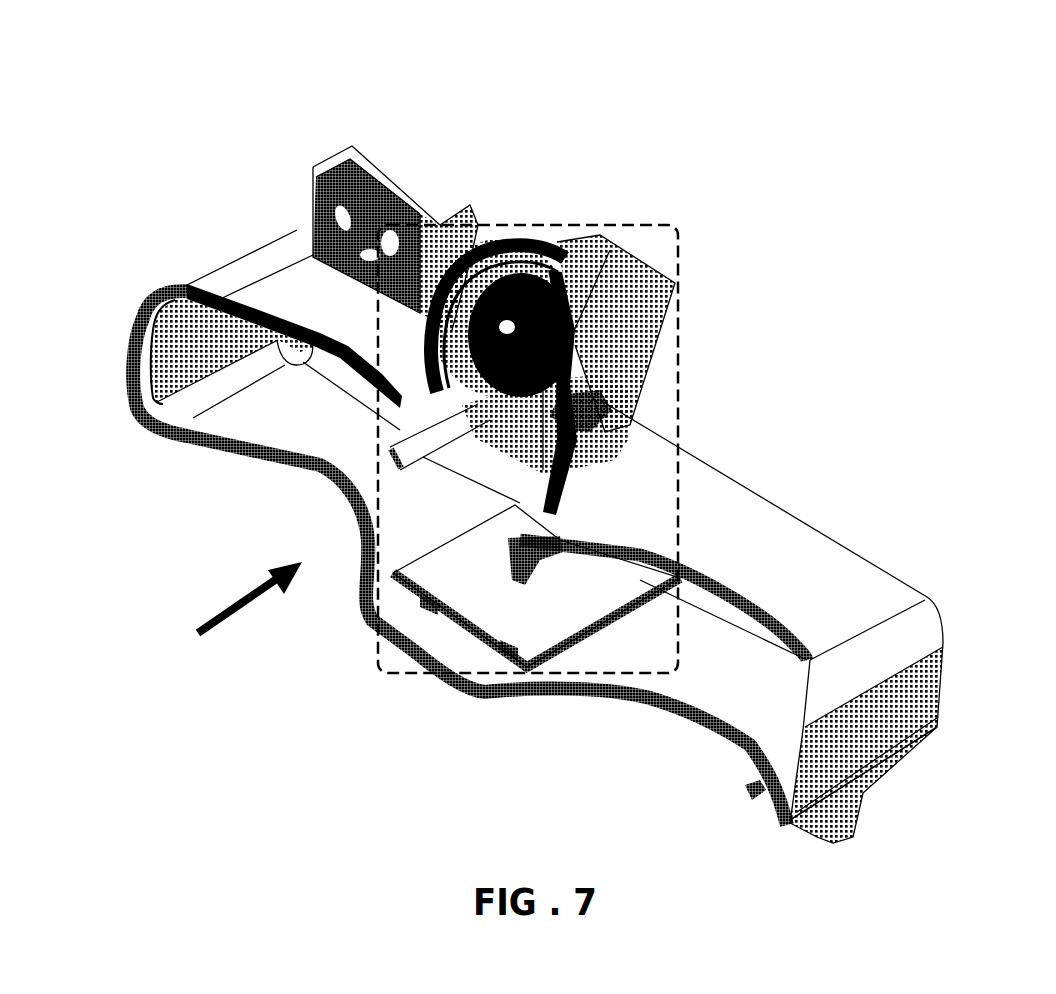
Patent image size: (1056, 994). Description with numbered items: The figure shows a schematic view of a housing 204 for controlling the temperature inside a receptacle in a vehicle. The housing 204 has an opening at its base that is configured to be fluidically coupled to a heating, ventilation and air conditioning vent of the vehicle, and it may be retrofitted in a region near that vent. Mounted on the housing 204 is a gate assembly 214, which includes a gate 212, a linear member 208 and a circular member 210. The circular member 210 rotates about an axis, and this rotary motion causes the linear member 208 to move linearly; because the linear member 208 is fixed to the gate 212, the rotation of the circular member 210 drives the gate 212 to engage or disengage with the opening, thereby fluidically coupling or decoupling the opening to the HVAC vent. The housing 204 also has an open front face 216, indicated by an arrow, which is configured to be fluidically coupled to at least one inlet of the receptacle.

The housing 204 is at (947, 92).
The linear member 208 is at (568, 340).
The circular member 210 is at (493, 253).
The gate 212 is at (470, 595).
The gate assembly 214 is at (678, 392).
The open front face 216 is at (225, 602).